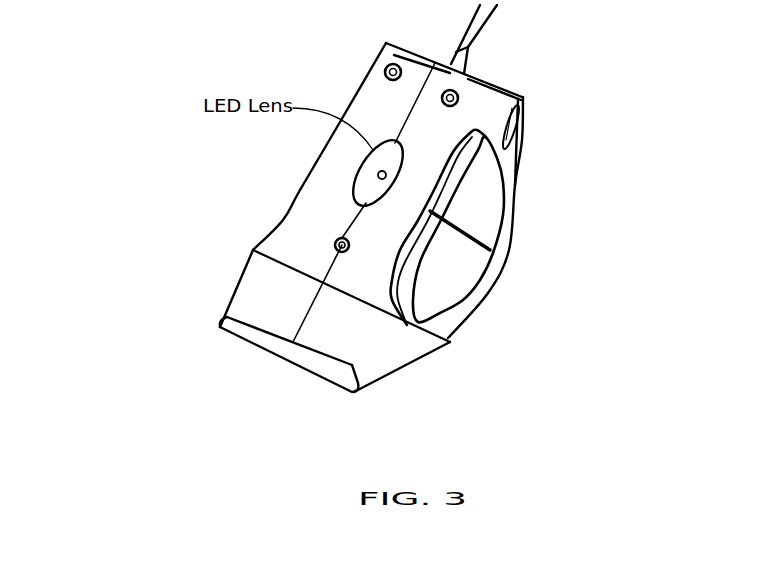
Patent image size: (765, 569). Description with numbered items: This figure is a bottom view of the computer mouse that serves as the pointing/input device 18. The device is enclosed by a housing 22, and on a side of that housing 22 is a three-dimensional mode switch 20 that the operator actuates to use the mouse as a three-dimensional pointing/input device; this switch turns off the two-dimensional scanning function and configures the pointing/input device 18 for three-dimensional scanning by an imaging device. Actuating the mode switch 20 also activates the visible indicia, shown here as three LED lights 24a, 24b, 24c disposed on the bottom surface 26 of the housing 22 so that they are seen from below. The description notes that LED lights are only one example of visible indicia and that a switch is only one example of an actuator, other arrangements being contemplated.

The pointing/input device 18 is at (509, 53).
The 3D mode switch 20 is at (520, 127).
The housing 22 is at (508, 252).
The LED light 24a is at (385, 68).
The LED light 24b is at (458, 95).
The LED light 24c is at (336, 237).
The bottom surface 26 is at (312, 237).